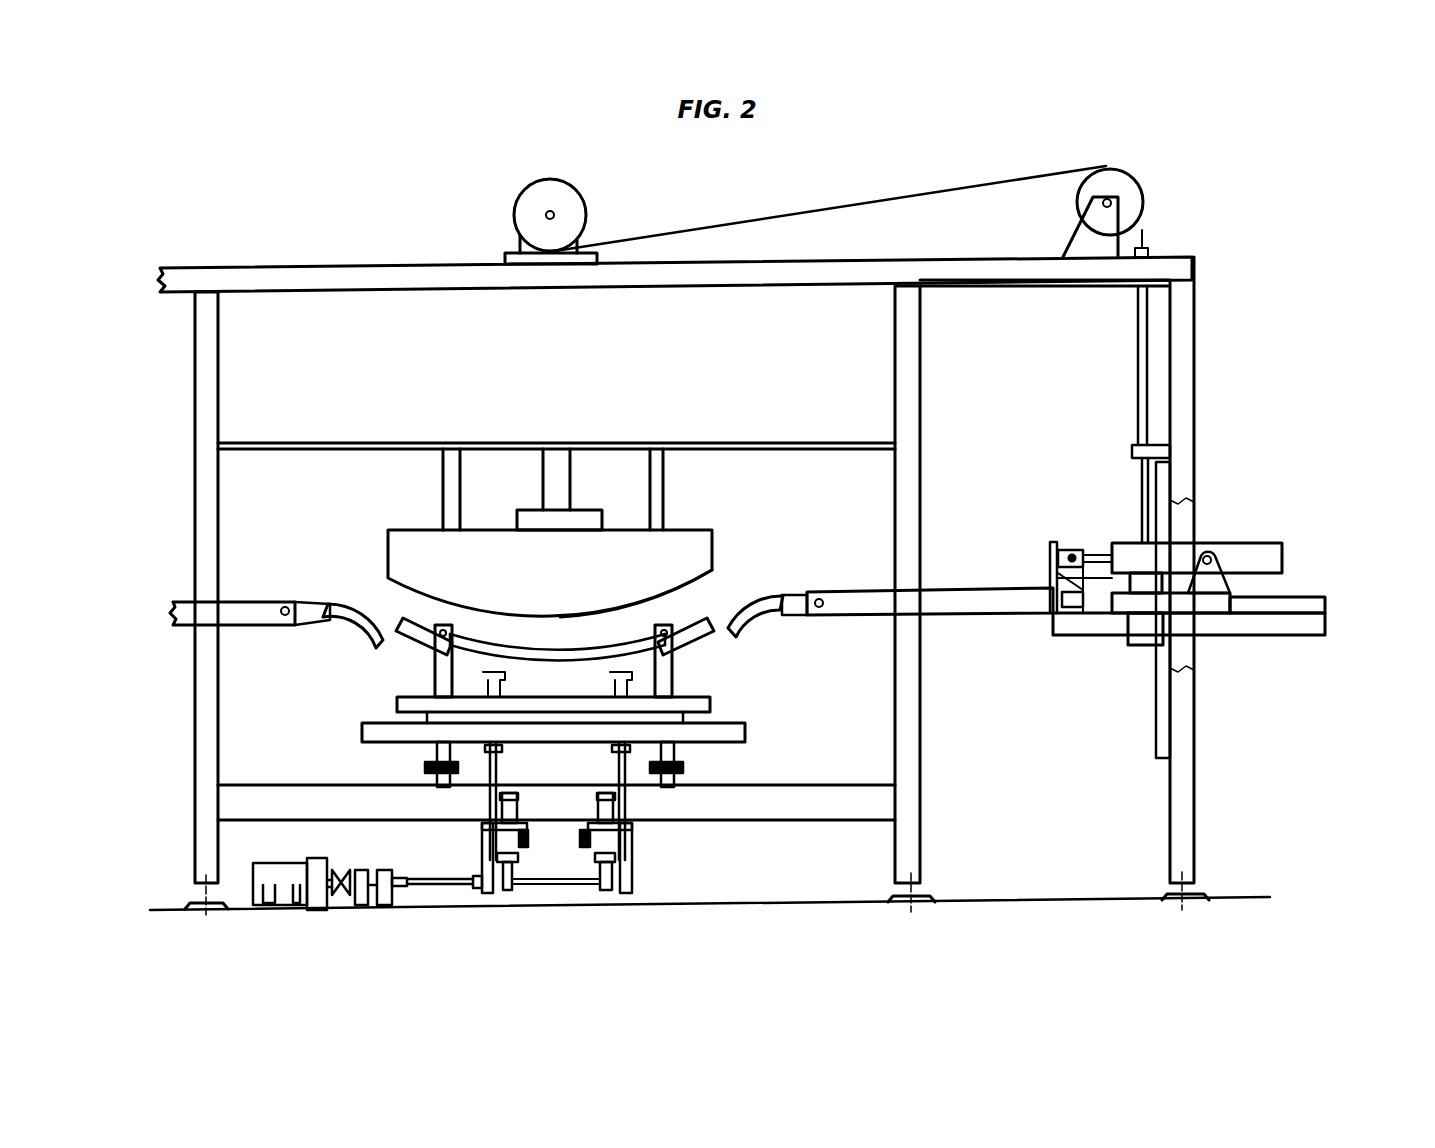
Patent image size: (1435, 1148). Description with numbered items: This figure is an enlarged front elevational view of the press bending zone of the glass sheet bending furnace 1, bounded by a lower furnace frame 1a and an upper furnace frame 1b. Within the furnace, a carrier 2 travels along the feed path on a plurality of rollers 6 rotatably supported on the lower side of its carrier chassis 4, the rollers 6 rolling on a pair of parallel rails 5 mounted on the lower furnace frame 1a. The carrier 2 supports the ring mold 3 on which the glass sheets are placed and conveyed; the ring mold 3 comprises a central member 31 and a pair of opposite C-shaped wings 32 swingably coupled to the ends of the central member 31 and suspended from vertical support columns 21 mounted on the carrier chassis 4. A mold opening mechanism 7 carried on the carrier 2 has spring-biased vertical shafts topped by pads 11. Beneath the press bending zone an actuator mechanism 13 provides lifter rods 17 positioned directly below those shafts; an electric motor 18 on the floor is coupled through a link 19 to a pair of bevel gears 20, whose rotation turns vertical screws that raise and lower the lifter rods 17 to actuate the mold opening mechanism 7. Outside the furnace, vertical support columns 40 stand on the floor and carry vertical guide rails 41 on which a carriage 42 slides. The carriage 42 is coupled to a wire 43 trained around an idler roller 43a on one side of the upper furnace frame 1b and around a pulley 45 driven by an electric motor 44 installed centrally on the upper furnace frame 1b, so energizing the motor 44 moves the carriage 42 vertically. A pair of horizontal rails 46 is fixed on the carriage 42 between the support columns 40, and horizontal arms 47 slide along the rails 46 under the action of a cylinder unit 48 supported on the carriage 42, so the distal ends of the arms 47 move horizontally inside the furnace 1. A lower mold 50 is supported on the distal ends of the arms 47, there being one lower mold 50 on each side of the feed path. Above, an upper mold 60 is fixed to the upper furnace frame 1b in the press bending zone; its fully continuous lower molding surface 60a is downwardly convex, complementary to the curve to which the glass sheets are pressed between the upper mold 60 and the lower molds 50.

The furnace 1 is at (912, 382).
The lower furnace frame 1a is at (800, 812).
The upper furnace frame 1b is at (285, 275).
The carrier 2 is at (395, 707).
The ring mold 3 is at (565, 655).
The carrier chassis 4 is at (365, 731).
The rails 5 is at (667, 780).
The rollers 6 is at (677, 744).
The mold opening mechanism 7 is at (475, 722).
The pads 11 is at (670, 690).
The actuator mechanism 13 is at (633, 850).
The lifter rods 17 is at (490, 800).
The electric motor 18 is at (280, 880).
The link 19 is at (440, 890).
The bevel gears 20 is at (510, 885).
The vertical support columns 21 is at (437, 678).
The central member 31 is at (495, 660).
The wings 32 is at (418, 625).
The vertical support columns 40 is at (1185, 385).
The vertical guide rails 41 is at (1160, 737).
The carriage 42 is at (1145, 500).
The wire 43 is at (998, 185).
The idler roller 43a is at (1122, 185).
The electric motor 44 is at (520, 250).
The pulley 45 is at (585, 200).
The horizontal rails 46 is at (1213, 605).
The horizontal arms 47 is at (255, 605).
The cylinder unit 48 is at (1255, 550).
The lower mold 50 is at (352, 628).
The upper mold 60 is at (688, 540).
The lower molding surface 60a is at (700, 582).